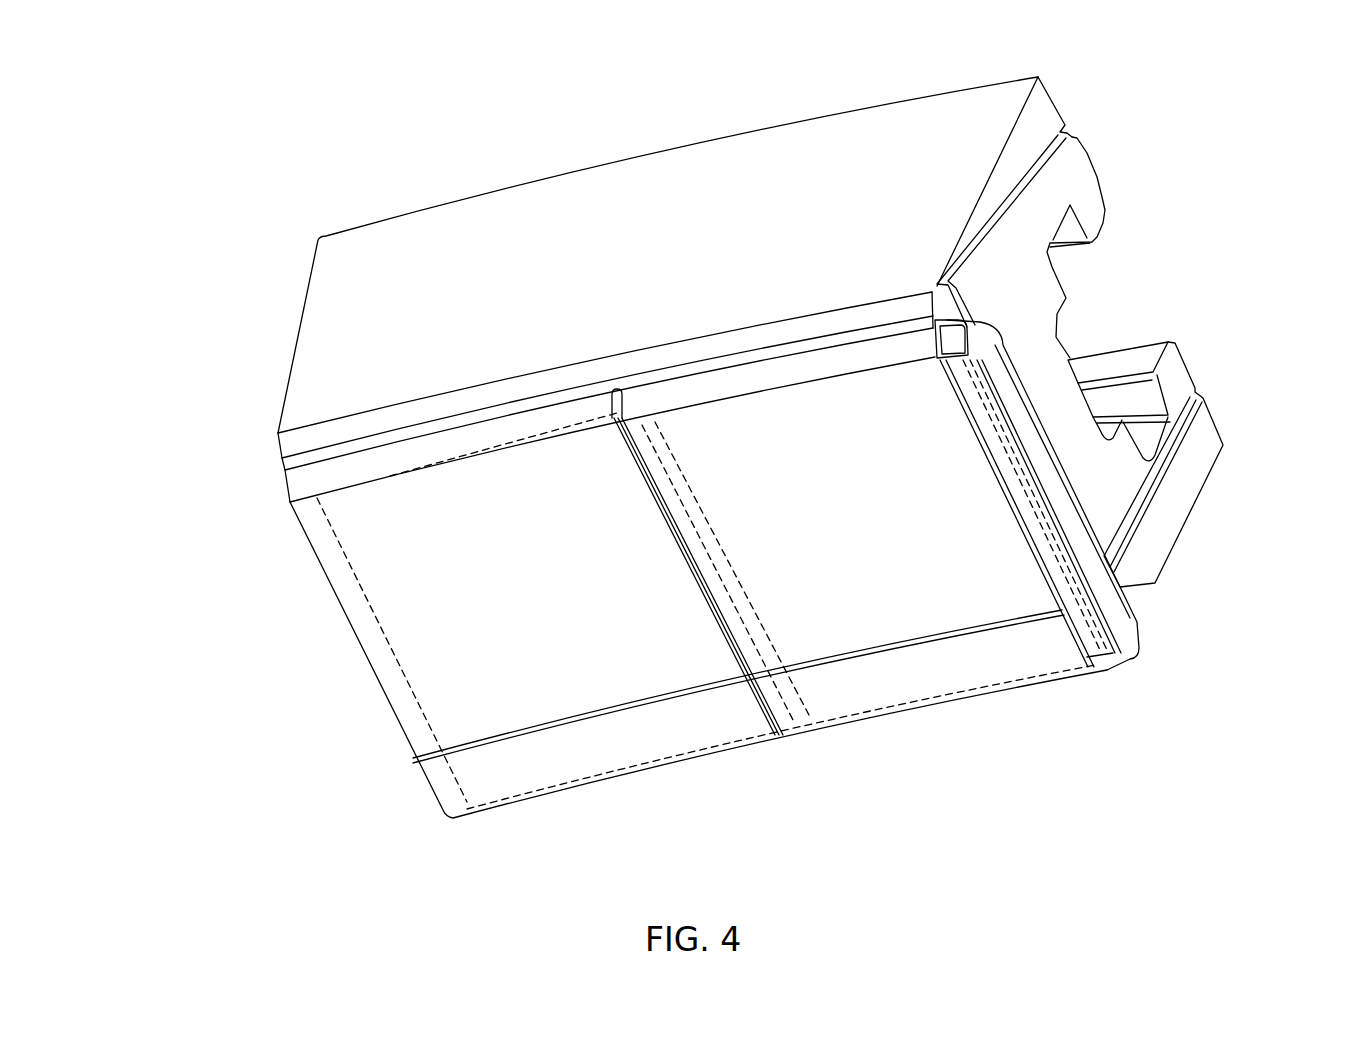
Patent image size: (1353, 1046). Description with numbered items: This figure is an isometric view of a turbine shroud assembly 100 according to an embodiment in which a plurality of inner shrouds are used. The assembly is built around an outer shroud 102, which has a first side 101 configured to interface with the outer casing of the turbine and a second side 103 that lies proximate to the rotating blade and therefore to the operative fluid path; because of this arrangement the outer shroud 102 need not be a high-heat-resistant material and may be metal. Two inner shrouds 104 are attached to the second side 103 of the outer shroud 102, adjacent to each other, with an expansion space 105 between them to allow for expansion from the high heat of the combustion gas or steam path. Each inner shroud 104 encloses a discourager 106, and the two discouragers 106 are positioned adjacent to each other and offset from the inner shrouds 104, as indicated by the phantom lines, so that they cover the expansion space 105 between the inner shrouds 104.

The turbine shroud assembly 100 is at (315, 108).
The first side 101 is at (1103, 300).
The outer shroud 102 is at (1087, 207).
The second side 103 is at (323, 438).
The inner shroud 104 is at (375, 665).
The expansion space 105 is at (642, 410).
The discourager 106 is at (1133, 623).